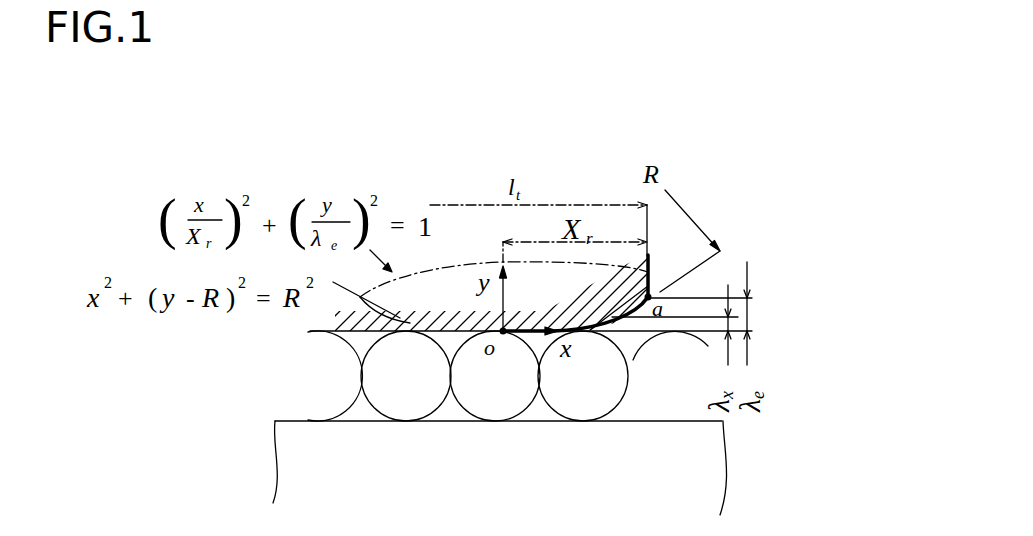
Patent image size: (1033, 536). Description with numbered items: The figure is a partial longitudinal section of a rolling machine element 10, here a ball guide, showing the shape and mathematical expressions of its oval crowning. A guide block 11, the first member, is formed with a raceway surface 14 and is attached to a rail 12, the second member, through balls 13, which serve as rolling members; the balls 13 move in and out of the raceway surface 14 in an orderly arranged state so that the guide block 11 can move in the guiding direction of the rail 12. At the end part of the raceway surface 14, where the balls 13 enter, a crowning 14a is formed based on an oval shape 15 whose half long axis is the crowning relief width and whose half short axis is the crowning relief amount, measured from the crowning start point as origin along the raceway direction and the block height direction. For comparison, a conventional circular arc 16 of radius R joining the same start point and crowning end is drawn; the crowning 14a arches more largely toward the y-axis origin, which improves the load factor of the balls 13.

The rolling machine element 10 is at (323, 146).
The guide block 11 is at (650, 270).
The rail 12 is at (285, 421).
The balls 13 is at (369, 412).
The raceway surface 14 is at (402, 333).
The crowning 14a is at (617, 326).
The oval shape 15 is at (463, 262).
The circular arc 16 is at (710, 256).